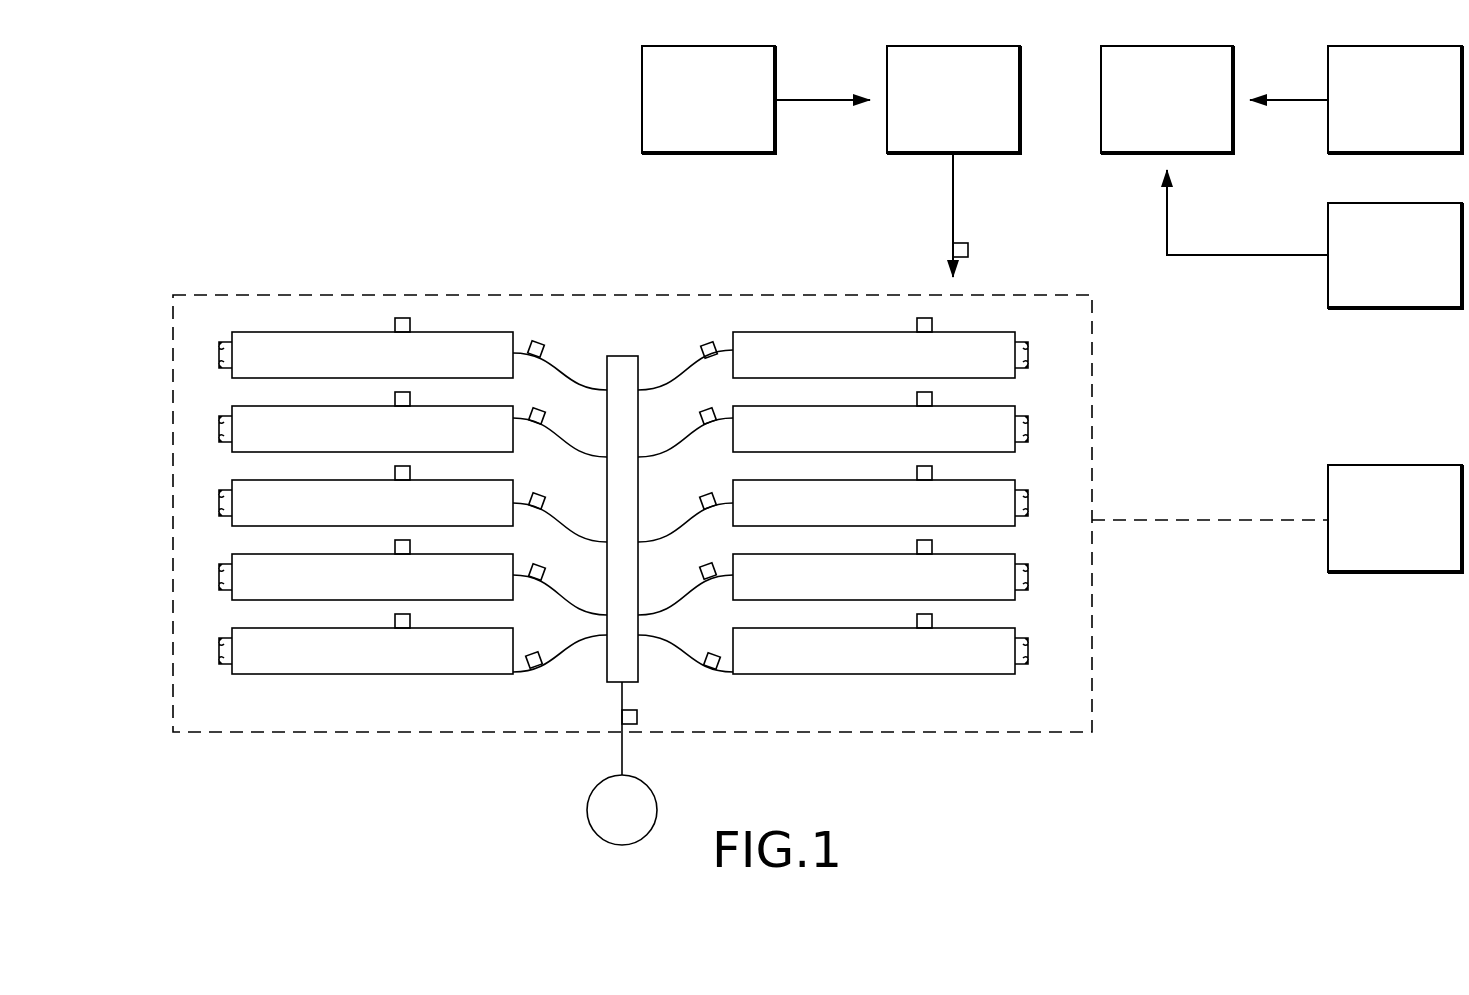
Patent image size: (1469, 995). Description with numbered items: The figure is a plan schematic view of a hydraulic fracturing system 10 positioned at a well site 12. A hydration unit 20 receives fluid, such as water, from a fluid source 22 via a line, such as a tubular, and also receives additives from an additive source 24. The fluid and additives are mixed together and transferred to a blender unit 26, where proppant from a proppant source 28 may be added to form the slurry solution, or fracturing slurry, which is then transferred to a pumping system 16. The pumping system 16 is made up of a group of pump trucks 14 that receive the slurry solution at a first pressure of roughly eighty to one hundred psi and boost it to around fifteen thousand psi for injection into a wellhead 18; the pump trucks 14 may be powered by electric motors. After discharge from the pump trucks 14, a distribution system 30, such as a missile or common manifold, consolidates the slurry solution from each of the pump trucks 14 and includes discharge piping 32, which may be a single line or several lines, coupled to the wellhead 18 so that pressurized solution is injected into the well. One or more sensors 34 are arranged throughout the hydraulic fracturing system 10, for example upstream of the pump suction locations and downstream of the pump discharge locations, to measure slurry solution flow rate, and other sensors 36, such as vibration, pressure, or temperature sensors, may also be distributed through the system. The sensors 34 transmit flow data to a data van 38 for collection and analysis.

The hydraulic fracturing system 10 is at (193, 107).
The well site 12 is at (214, 839).
The pump trucks 14 is at (623, 503).
The pumping system 16 is at (196, 280).
The wellhead 18 is at (610, 822).
The hydration unit 20 is at (1155, 120).
The fluid source 22 is at (1383, 120).
The additive source 24 is at (1383, 272).
The blender unit 26 is at (941, 120).
The proppant source 28 is at (696, 120).
The distribution system 30 is at (624, 372).
The discharge piping 32 is at (622, 752).
The sensors 34 is at (714, 486).
The other sensors 36 is at (622, 506).
The data van 38 is at (1383, 535).